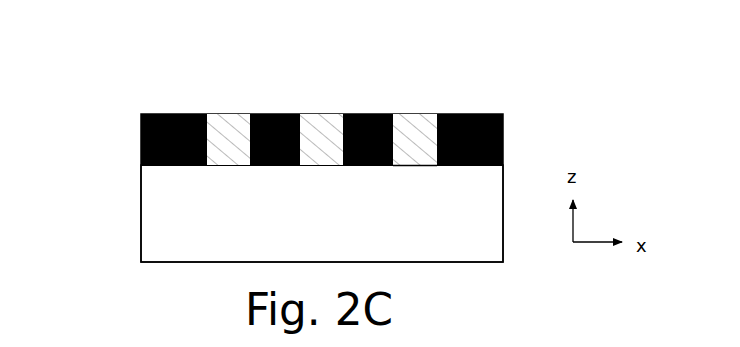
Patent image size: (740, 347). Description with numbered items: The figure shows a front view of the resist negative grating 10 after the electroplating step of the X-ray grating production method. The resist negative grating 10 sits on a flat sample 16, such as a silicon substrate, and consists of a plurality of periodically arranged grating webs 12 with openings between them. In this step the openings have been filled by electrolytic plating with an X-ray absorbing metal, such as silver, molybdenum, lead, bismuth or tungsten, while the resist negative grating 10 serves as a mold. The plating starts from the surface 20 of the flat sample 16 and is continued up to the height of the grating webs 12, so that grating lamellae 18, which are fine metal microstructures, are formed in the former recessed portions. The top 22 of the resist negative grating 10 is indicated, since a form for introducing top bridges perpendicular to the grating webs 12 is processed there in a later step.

The resist negative grating 10 is at (524, 90).
The grating webs 12 is at (141, 141).
The flat sample 16 is at (141, 236).
The grating lamellae 18 is at (227, 122).
The surface 20 is at (412, 166).
The top 22 is at (385, 104).